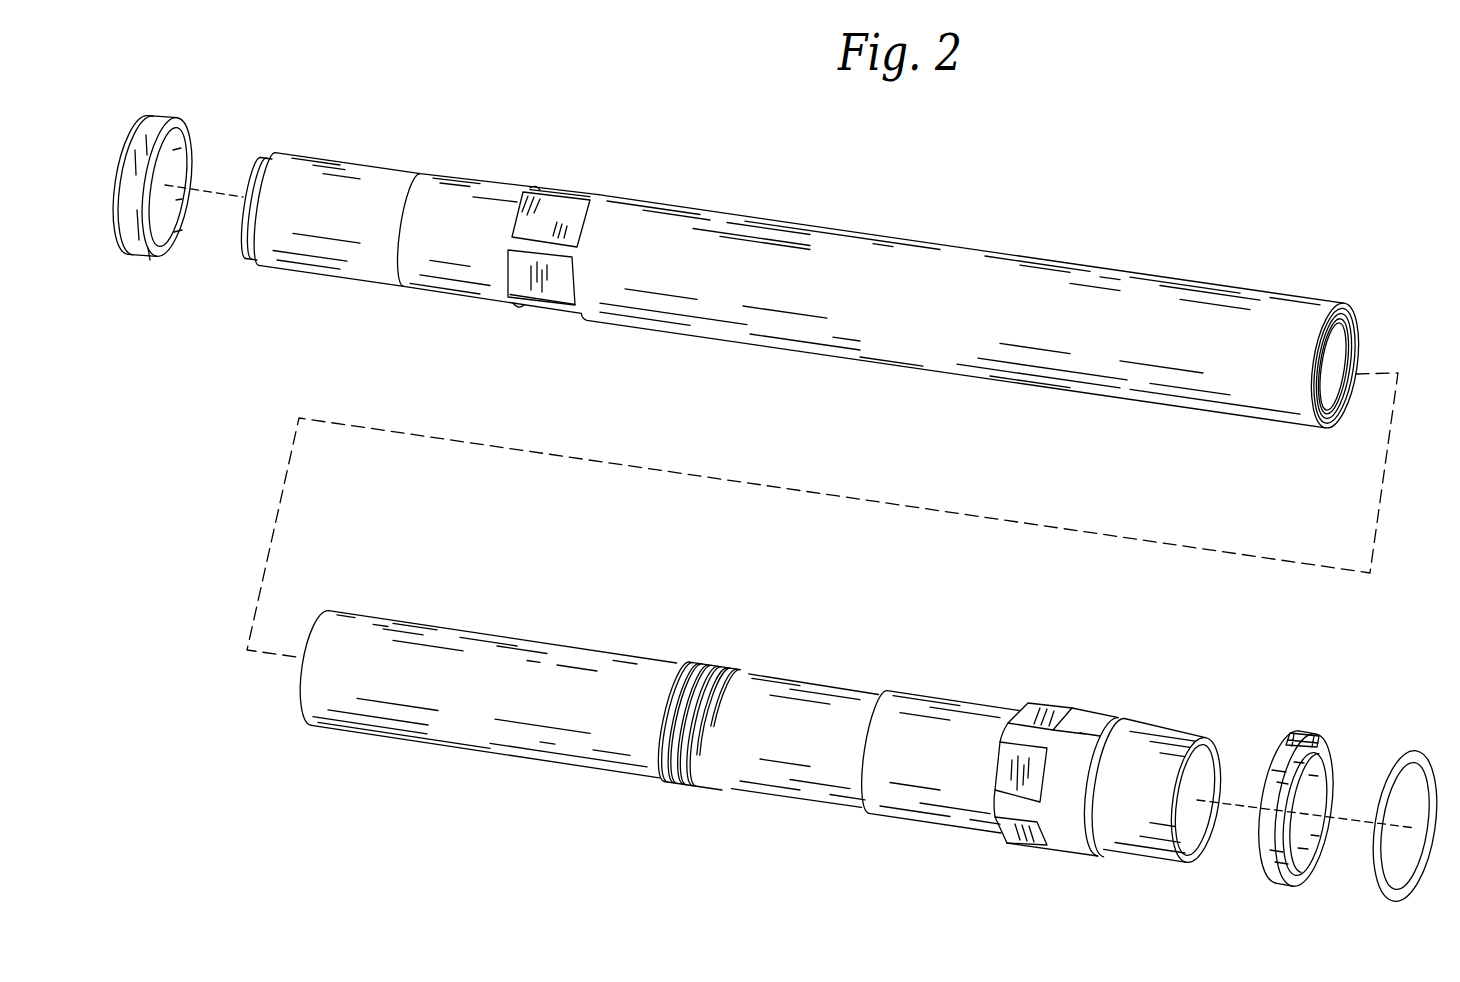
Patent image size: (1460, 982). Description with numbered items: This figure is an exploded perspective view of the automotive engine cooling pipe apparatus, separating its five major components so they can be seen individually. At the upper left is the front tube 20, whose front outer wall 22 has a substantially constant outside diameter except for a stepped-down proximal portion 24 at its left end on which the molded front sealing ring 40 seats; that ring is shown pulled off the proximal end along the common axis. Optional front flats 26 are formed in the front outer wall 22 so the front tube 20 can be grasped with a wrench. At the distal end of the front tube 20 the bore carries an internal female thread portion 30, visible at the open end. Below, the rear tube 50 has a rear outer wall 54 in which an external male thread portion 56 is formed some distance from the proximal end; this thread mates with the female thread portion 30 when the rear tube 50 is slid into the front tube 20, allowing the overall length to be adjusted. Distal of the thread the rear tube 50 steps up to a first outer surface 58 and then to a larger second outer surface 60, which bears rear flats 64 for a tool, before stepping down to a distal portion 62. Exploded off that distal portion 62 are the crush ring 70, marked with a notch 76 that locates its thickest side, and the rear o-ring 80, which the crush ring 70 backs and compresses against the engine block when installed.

The front tube 20 is at (768, 145).
The front outer wall 22 is at (853, 250).
The stepped-down proximal portion 24 is at (363, 172).
The front flats 26 is at (557, 207).
The female thread portion 30 is at (1343, 340).
The front sealing ring 40 is at (162, 116).
The rear tube 50 is at (895, 582).
The rear outer wall 54 is at (570, 655).
The male thread portion 56 is at (727, 662).
The first outer surface 58 is at (907, 698).
The second outer surface 60 is at (1063, 749).
The stepped-down distal portion 62 is at (1170, 737).
The rear flats 64 is at (1044, 707).
The crush ring 70 is at (1303, 783).
The notch 76 is at (1295, 735).
The rear o-ring 80 is at (1416, 752).